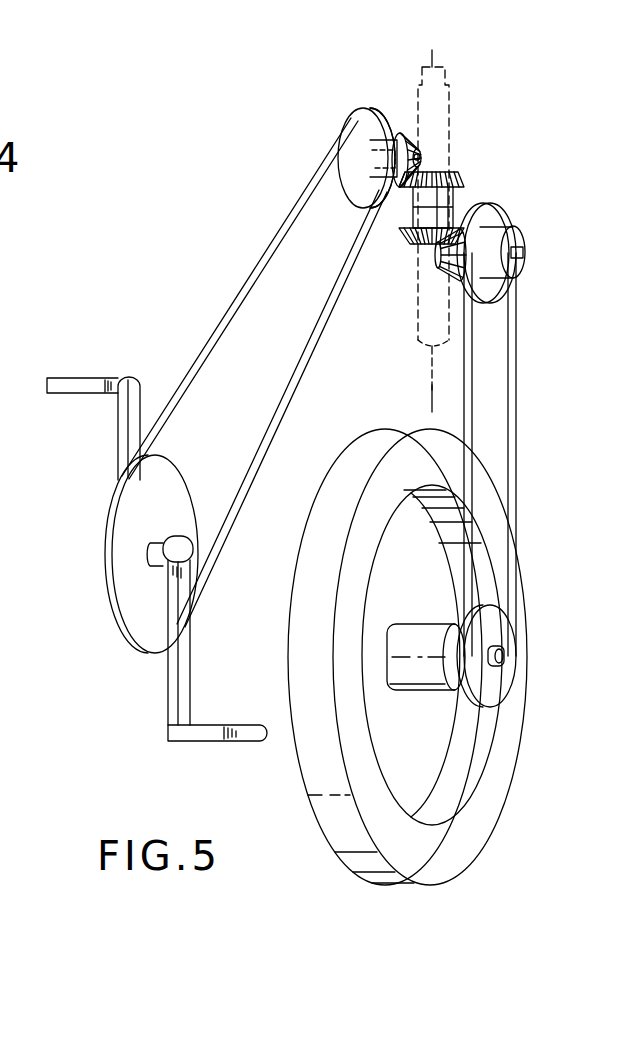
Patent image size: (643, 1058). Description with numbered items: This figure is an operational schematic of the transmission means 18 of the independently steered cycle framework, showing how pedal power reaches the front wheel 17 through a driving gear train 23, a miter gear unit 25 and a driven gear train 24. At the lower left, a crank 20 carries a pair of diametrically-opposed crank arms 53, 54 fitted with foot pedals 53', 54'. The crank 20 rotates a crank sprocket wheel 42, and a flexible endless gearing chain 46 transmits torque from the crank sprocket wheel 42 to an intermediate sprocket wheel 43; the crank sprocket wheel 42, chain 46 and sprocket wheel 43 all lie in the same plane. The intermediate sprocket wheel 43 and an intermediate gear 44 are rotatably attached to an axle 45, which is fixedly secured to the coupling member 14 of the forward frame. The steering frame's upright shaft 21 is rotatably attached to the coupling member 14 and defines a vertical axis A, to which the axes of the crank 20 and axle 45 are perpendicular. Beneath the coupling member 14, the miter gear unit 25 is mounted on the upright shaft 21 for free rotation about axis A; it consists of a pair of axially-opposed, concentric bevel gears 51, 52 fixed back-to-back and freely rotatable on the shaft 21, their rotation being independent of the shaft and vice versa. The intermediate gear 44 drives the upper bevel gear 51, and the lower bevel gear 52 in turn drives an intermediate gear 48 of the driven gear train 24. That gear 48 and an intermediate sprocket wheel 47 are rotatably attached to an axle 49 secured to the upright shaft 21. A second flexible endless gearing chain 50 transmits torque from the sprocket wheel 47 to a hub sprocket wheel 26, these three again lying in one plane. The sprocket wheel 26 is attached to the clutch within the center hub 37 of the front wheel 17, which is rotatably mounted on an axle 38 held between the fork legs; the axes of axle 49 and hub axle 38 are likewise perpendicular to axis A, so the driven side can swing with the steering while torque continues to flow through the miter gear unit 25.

The coupling member 14 is at (452, 108).
The front wheel 17 is at (497, 800).
The transmission means 18 is at (340, 127).
The crank 20 is at (145, 555).
The upright shaft 21 is at (419, 346).
The driving gear train 23 is at (252, 372).
The driven gear train 24 is at (518, 462).
The miter gear unit 25 is at (457, 196).
The sprocket wheel 26 is at (495, 690).
The center hub 37 is at (419, 623).
The axle 38 is at (504, 655).
The crank sprocket wheel 42 is at (160, 485).
The intermediate sprocket wheel 43 is at (374, 126).
The intermediate gear 44 is at (415, 142).
The axle 45 is at (421, 157).
The flexible endless gearing chain 46 is at (284, 217).
The intermediate sprocket wheel 47 is at (495, 293).
The intermediate gear 48 is at (440, 266).
The axle 49 is at (524, 252).
The flexible endless gearing chain 50 is at (551, 454).
The bevel gear 51 is at (458, 182).
The bevel gear 52 is at (407, 245).
The crank arm 53 is at (81, 428).
The foot pedal 53' is at (82, 340).
The crank arm 54 is at (141, 643).
The foot pedal 54' is at (224, 769).
The vertical axis A is at (424, 400).